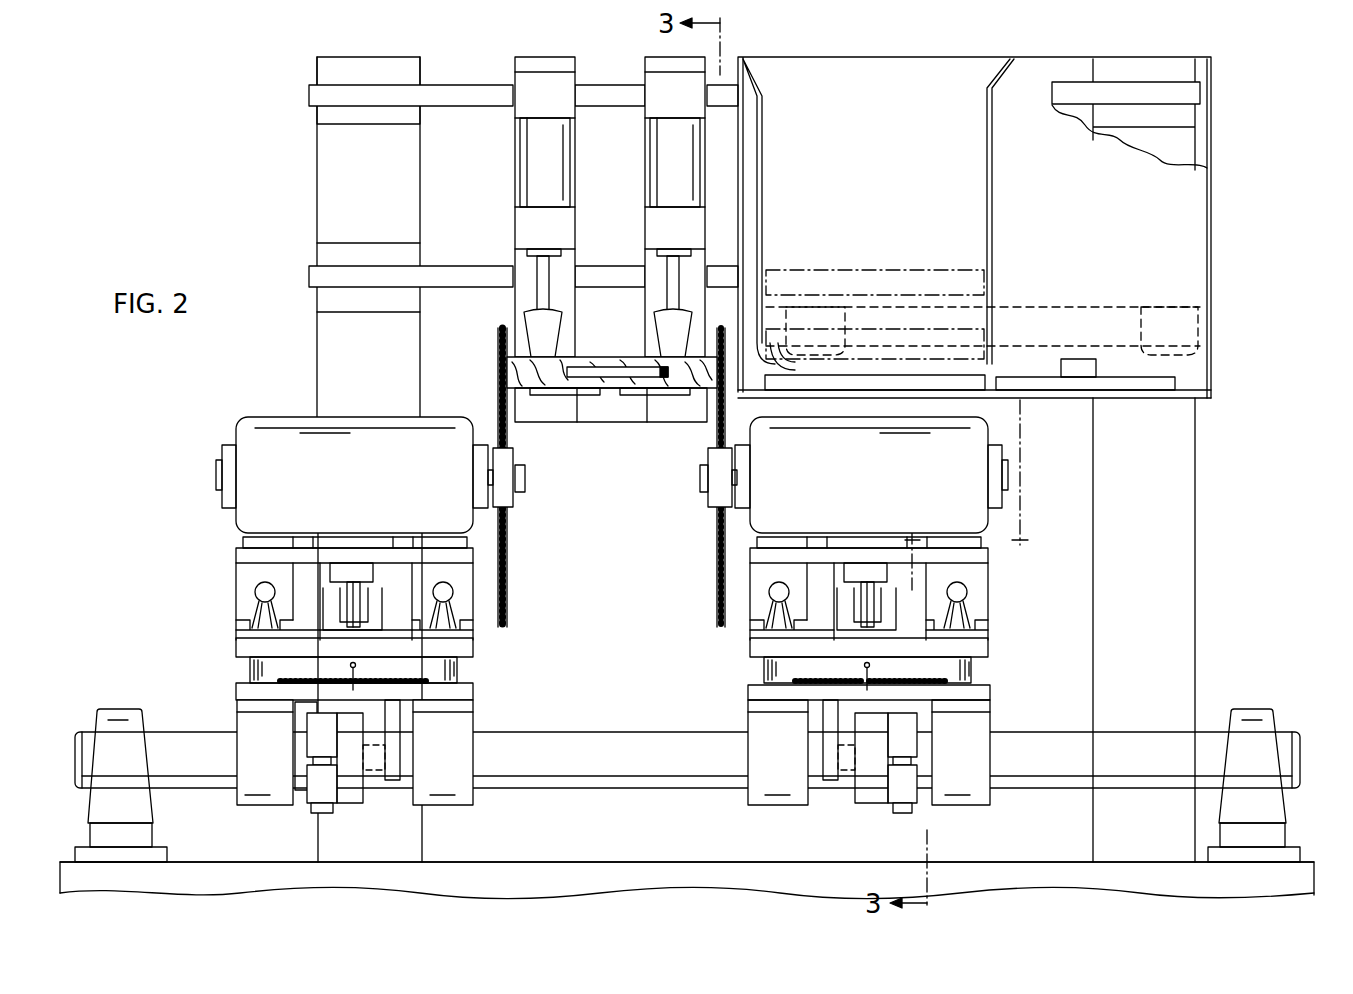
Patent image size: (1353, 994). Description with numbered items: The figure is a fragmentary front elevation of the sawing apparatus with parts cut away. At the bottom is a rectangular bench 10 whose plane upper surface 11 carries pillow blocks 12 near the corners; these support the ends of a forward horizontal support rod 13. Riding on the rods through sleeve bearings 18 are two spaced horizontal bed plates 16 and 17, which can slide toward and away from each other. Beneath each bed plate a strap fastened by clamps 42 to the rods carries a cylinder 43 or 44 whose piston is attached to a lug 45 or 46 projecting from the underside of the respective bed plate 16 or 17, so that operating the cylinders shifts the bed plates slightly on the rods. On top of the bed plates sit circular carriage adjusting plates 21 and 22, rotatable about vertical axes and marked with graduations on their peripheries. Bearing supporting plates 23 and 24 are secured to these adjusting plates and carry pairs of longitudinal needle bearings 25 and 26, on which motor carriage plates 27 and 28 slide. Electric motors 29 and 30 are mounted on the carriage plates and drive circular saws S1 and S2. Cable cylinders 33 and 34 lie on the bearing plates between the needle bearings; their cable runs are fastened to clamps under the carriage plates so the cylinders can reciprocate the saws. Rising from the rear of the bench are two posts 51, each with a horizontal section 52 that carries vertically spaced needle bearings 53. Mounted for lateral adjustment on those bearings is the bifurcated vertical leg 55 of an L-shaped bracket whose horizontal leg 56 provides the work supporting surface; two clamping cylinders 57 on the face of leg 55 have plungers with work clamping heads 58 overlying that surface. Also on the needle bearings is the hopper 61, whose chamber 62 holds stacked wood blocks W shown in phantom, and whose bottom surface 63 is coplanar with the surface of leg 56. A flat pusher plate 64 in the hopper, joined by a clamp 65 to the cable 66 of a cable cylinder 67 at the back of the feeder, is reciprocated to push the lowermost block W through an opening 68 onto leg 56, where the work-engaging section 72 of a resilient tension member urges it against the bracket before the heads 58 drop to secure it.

The bench 10 is at (1316, 858).
The upper surface 11 is at (578, 860).
The pillow block 12 is at (120, 709).
The support rod 13 is at (615, 778).
The bed plate 16 is at (473, 692).
The bed plate 17 is at (748, 692).
The sleeve bearing 18 is at (240, 805).
The carriage adjusting plate 21 is at (250, 668).
The carriage adjusting plate 22 is at (764, 668).
The bearing supporting plate 23 is at (236, 650).
The bearing supporting plate 24 is at (988, 650).
The needle bearing 25 is at (256, 592).
The needle bearing 26 is at (770, 596).
The motor carriage plate 27 is at (243, 550).
The motor carriage plate 28 is at (981, 548).
The electric motor 29 is at (362, 485).
The electric motor 30 is at (882, 485).
The cable cylinder 33 is at (382, 625).
The cable cylinder 34 is at (897, 602).
The clamp 42 is at (308, 800).
The cylinder 43 is at (345, 800).
The cylinder 44 is at (858, 793).
The lug 45 is at (395, 715).
The lug 46 is at (822, 715).
The post 51 is at (317, 378).
The horizontal section 52 is at (317, 160).
The needle bearing 53 is at (468, 108).
The bifurcated leg 55 is at (610, 189).
The bracket leg 56 is at (602, 424).
The clamping cylinder 57 is at (648, 160).
The work clamping head 58 is at (658, 334).
The hopper 61 is at (838, 58).
The chamber 62 is at (918, 82).
The bottom surface 63 is at (858, 375).
The pusher plate 64 is at (1160, 390).
The clamp 65 is at (1068, 362).
The cable 66 is at (1116, 380).
The cable cylinder 67 is at (1050, 306).
The opening 68 is at (780, 345).
The work-engaging section 72 is at (616, 380).
The circular saw S1 is at (507, 568).
The circular saw S2 is at (717, 568).
The workpiece W is at (543, 390).